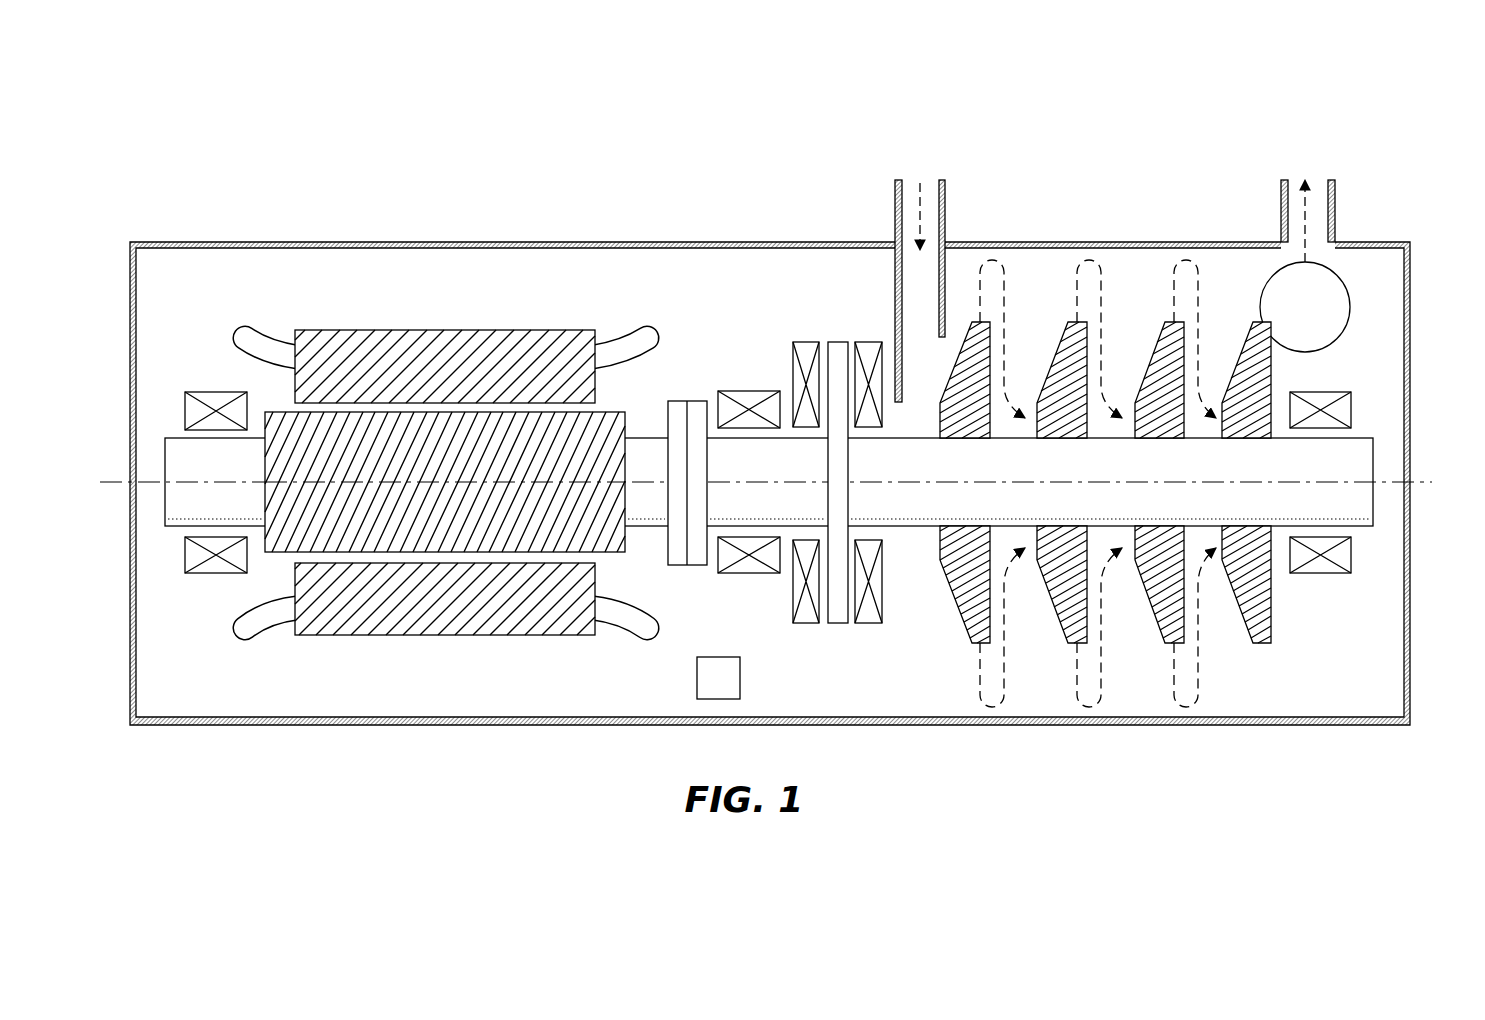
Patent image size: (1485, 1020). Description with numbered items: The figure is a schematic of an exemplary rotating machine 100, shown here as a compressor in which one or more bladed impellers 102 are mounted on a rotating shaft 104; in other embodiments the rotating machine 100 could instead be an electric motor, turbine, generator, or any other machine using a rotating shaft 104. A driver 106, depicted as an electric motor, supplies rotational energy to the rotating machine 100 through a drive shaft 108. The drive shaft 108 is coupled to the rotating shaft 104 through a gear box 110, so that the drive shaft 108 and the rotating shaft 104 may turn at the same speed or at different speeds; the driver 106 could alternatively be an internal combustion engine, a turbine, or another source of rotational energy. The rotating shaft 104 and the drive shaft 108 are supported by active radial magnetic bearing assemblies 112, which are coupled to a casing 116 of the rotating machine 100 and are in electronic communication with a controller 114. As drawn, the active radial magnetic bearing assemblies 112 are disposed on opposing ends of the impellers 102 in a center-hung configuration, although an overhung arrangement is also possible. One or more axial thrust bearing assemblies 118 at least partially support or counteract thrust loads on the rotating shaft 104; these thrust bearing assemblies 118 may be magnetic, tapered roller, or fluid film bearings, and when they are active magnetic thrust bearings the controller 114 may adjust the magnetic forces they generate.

The rotating machine 100 is at (193, 102).
The bladed impellers 102 is at (945, 393).
The rotating shaft 104 is at (1373, 457).
The driver 106 is at (314, 312).
The drive shaft 108 is at (655, 530).
The gear box 110 is at (697, 400).
The active radial magnetic bearing assemblies 112 is at (748, 390).
The controller 114 is at (697, 668).
The casing 116 is at (265, 720).
The axial thrust bearing assemblies 118 is at (868, 625).